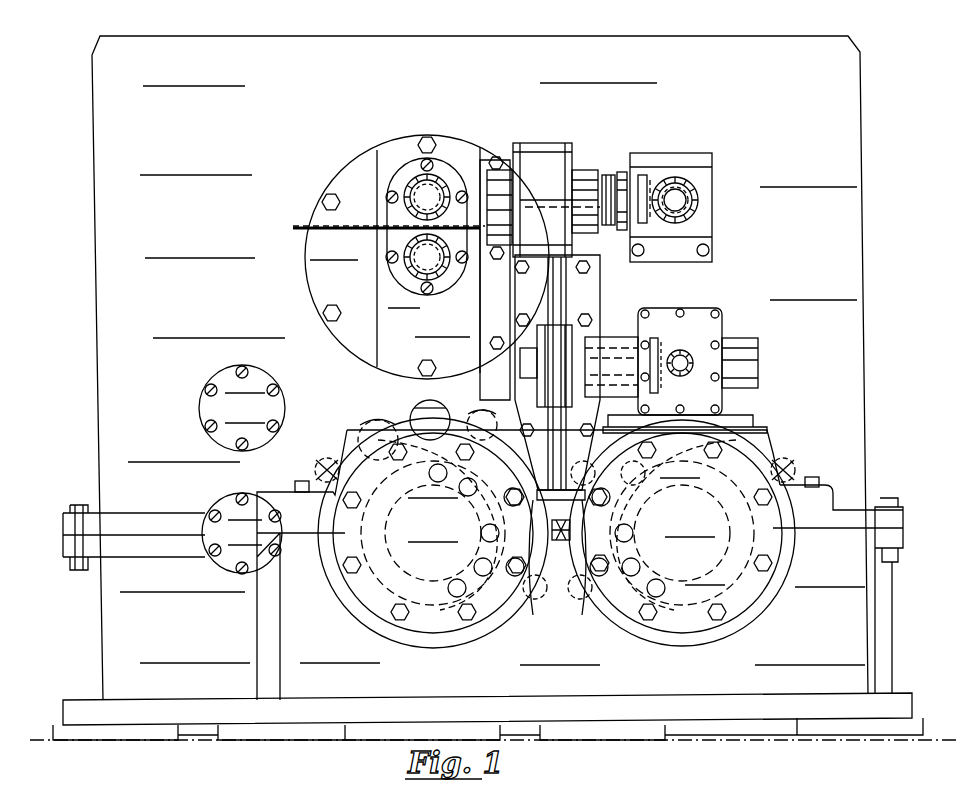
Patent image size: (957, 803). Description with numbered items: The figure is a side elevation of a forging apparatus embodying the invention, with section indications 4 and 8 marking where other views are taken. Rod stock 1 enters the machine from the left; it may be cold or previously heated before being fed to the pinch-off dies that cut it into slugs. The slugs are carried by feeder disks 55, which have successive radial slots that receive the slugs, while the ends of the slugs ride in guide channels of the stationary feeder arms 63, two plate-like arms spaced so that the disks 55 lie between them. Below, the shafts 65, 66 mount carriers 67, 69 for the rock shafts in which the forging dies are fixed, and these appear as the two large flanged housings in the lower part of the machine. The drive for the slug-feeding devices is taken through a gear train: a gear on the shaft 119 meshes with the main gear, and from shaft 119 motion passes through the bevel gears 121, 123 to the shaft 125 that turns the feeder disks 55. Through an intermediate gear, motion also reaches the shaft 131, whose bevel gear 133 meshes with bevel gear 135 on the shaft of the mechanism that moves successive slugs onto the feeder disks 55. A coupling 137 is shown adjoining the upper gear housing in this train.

The rod stock 1 is at (303, 226).
The section line 4- 4 is at (427, 397).
The section line 8- 8 is at (487, 317).
The feeder disks 55 is at (548, 450).
The stationary feeder arms 63 is at (565, 422).
The shaft 65 is at (403, 565).
The shaft 66 is at (718, 553).
The carrier 67 is at (427, 623).
The carrier 69 is at (700, 617).
The shaft 119 is at (722, 392).
The bevel gear 121 is at (690, 355).
The bevel gear 123 is at (660, 345).
The shaft 125 is at (600, 340).
The shaft 131 is at (712, 188).
The bevel gear 133 is at (685, 190).
The bevel gear 135 is at (650, 178).
The coupling 137 is at (609, 172).